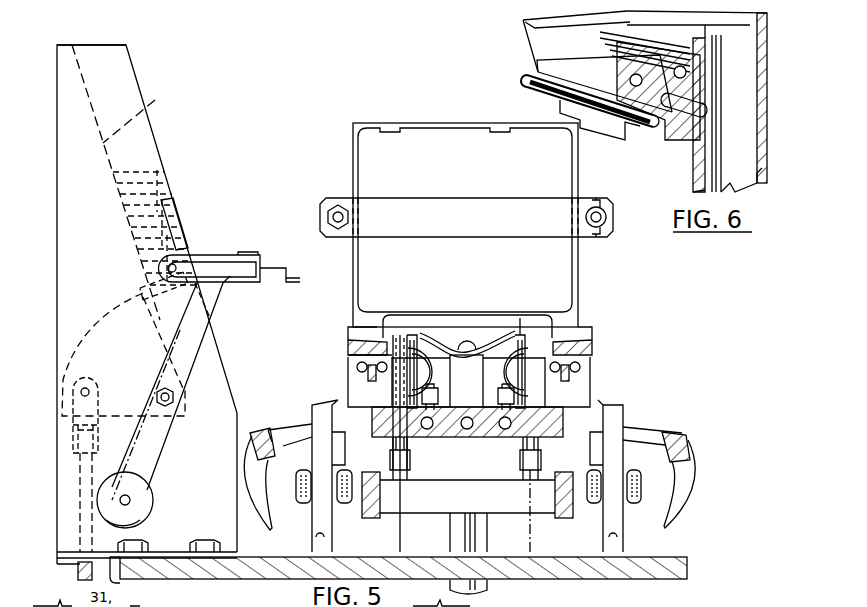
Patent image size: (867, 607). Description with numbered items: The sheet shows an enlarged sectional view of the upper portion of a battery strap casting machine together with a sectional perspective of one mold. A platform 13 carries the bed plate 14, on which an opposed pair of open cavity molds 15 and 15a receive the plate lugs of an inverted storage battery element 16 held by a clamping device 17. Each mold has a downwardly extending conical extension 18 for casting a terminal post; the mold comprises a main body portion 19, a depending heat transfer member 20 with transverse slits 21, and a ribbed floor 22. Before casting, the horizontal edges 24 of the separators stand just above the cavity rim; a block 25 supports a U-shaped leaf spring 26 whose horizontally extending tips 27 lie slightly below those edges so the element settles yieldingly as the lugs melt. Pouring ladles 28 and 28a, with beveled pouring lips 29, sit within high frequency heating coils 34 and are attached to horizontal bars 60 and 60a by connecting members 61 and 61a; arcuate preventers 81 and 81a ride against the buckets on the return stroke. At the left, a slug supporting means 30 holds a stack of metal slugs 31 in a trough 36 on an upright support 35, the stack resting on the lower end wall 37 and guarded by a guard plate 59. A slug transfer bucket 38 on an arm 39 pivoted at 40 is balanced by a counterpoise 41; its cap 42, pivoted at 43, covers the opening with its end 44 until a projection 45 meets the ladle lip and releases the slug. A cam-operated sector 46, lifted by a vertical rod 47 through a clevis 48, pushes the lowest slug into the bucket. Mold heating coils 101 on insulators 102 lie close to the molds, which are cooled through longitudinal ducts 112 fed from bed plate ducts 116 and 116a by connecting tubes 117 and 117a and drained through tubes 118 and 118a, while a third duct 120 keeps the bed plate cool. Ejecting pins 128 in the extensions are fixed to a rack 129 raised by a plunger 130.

In FIG. 5, the platform 13 is at (660, 557).
In FIG. 5, the bed plate 14 is at (455, 418).
In FIG. 5, the open cavity mold 15 is at (358, 340).
In FIG. 6, the open cavity mold 15 is at (524, 22).
In FIG. 5, the open cavity mold 15a is at (585, 340).
In FIG. 5, the storage battery element 16 is at (370, 152).
In FIG. 5, the clamping device 17 is at (606, 233).
In FIG. 5, the conical extension 18 is at (398, 335).
In FIG. 6, the conical extension 18 is at (745, 138).
In FIG. 6, the main body portion 19 is at (545, 58).
In FIG. 5, the heat transfer member 20 is at (372, 380).
In FIG. 6, the heat transfer member 20 is at (668, 140).
In FIG. 6, the transverse slits 21 is at (622, 128).
In FIG. 6, the ribbed mold floor 22 is at (615, 42).
In FIG. 5, the horizontal edges of the separators 24 is at (460, 330).
In FIG. 5, the block 25 is at (466, 381).
In FIG. 5, the U-shaped leaf spring 26 is at (467, 341).
In FIG. 5, the horizontally extending tips 27 is at (506, 335).
In FIG. 5, the pouring ladle 28 is at (320, 422).
In FIG. 5, the pouring ladle 28a is at (622, 428).
In FIG. 5, the pouring lip 29 is at (340, 420).
In FIG. 5, the slug supporting means 30 is at (156, 52).
In FIG. 5, the metal slugs 31 is at (147, 167).
In FIG. 5, the high frequency heating coil 34 is at (304, 503).
In FIG. 5, the upright support 35 is at (66, 178).
In FIG. 5, the trough 36 is at (155, 108).
In FIG. 5, the lower end wall 37 is at (164, 297).
In FIG. 5, the slug transfer bucket 38 is at (220, 262).
In FIG. 5, the arm 39 is at (213, 305).
In FIG. 5, the pivot 40 is at (158, 392).
In FIG. 5, the counterpoise 41 is at (150, 507).
In FIG. 5, the cap 42 is at (256, 254).
In FIG. 5, the cap pivot 43 is at (176, 266).
In FIG. 5, the cap end 44 is at (270, 270).
In FIG. 5, the projection 45 is at (290, 284).
In FIG. 5, the cam-operated sector 46 is at (80, 334).
In FIG. 5, the vertical rod 47 is at (80, 490).
In FIG. 5, the clevis 48 is at (78, 442).
In FIG. 5, the guard plate 59 is at (180, 210).
In FIG. 5, the horizontal bar 60 is at (262, 433).
In FIG. 5, the horizontal bar 60a is at (688, 434).
In FIG. 5, the connecting member 61 is at (294, 430).
In FIG. 5, the connecting member 61a is at (658, 432).
In FIG. 5, the arcuate preventer 81 is at (262, 520).
In FIG. 5, the arcuate preventer 81a is at (684, 512).
In FIG. 5, the heating coil 101 is at (358, 364).
In FIG. 6, the heating coil 101 is at (524, 80).
In FIG. 5, the insulator 102 is at (350, 380).
In FIG. 5, the longitudinal duct 112 is at (354, 350).
In FIG. 6, the longitudinal duct 112 is at (630, 80).
In FIG. 5, the longitudinal duct 116 is at (412, 437).
In FIG. 5, the longitudinal duct 116a is at (524, 437).
In FIG. 5, the connecting tube 117 is at (432, 380).
In FIG. 5, the connecting tube 117a is at (504, 380).
In FIG. 5, the discharge tube 118 is at (416, 335).
In FIG. 5, the discharge tube 118a is at (530, 335).
In FIG. 5, the third duct 120 is at (490, 437).
In FIG. 5, the ejecting pin 128 is at (392, 398).
In FIG. 5, the rack 129 is at (356, 512).
In FIG. 5, the plunger 130 is at (478, 552).